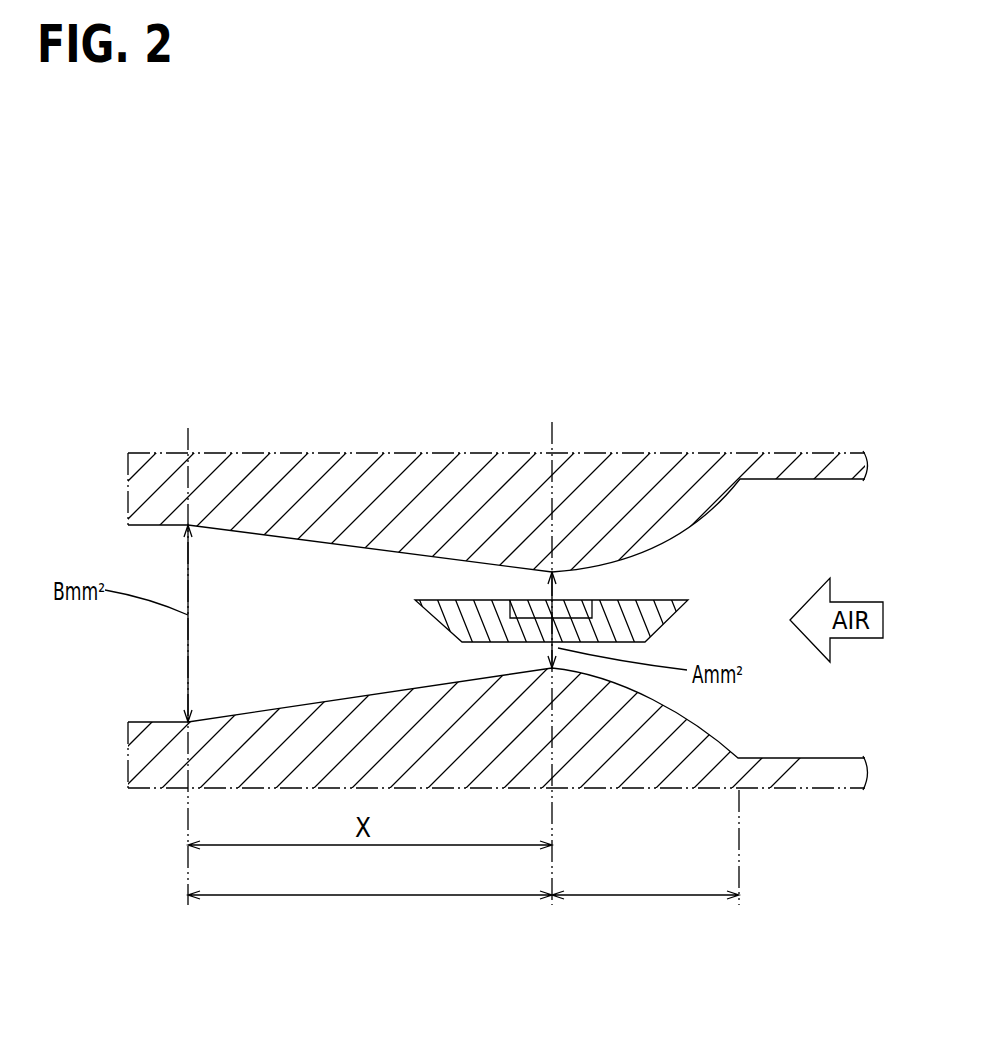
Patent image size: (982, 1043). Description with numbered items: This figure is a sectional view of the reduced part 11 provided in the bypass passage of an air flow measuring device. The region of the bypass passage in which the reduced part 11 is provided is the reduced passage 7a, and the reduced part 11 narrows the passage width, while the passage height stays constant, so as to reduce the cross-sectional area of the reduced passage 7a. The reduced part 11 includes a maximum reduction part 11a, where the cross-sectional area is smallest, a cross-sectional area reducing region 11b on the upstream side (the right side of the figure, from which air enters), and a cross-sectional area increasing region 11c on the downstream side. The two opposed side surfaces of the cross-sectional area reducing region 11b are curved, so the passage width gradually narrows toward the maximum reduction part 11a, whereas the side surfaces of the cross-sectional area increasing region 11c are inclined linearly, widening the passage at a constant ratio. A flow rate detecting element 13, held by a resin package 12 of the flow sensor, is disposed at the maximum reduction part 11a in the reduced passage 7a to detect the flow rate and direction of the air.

The reduced part 11 is at (542, 557).
The maximum reduction part 11a is at (553, 668).
The cross-sectional area reducing region 11b is at (645, 881).
The cross-sectional area increasing region 11c is at (370, 883).
The resin package 12 is at (465, 617).
The flow rate detecting element 13 is at (562, 617).
The reduced passage 7a is at (307, 637).